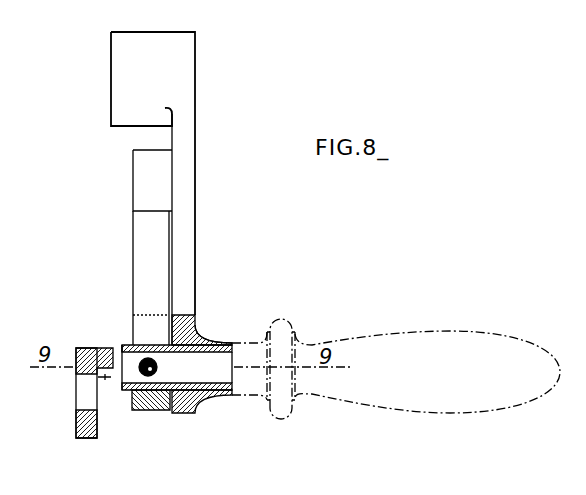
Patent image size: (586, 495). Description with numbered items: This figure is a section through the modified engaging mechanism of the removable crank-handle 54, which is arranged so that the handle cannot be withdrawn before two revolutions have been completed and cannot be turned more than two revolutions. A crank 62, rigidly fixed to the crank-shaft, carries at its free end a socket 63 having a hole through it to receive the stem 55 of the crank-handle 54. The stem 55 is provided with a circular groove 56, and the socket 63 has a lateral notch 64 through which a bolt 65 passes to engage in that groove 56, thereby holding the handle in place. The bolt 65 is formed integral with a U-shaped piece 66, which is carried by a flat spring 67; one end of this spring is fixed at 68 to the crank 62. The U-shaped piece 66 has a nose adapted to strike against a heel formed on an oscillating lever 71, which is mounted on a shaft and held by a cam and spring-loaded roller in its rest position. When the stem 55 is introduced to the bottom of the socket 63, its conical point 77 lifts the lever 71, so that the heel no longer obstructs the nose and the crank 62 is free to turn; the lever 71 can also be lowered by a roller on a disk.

The crank-handle 54 is at (396, 369).
The stem 55 is at (218, 338).
The circular groove 56 is at (148, 345).
The crank 62 is at (184, 249).
The socket 63 is at (126, 344).
The lateral notch 64 is at (158, 374).
The bolt 65 is at (157, 366).
The U-shaped piece 66 is at (143, 409).
The flat spring 67 is at (151, 278).
The fixing point of flat spring 68 is at (152, 180).
The oscillating lever 71 is at (85, 395).
The conical point 77 is at (106, 382).